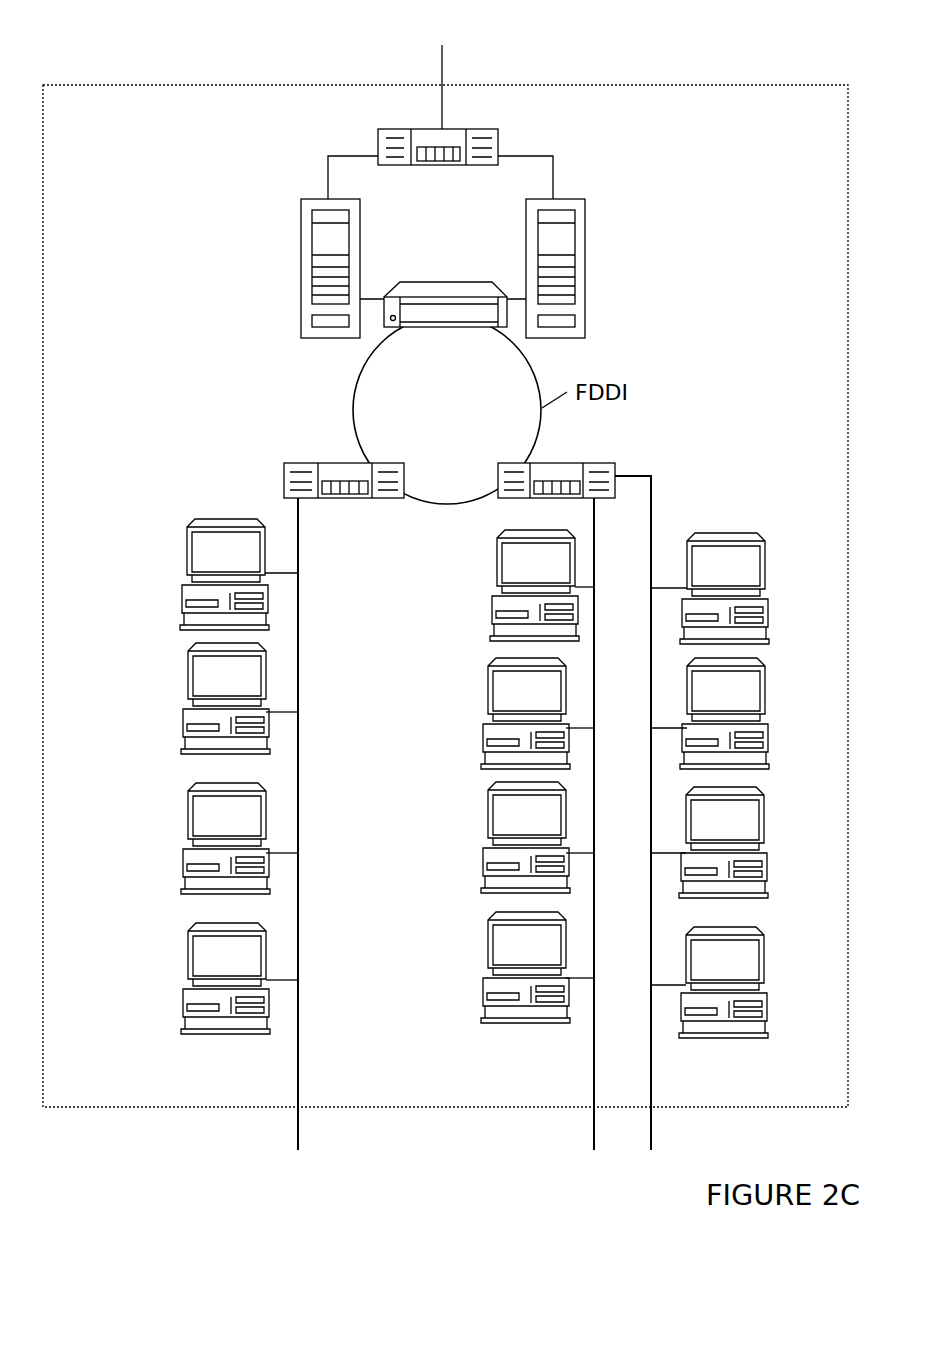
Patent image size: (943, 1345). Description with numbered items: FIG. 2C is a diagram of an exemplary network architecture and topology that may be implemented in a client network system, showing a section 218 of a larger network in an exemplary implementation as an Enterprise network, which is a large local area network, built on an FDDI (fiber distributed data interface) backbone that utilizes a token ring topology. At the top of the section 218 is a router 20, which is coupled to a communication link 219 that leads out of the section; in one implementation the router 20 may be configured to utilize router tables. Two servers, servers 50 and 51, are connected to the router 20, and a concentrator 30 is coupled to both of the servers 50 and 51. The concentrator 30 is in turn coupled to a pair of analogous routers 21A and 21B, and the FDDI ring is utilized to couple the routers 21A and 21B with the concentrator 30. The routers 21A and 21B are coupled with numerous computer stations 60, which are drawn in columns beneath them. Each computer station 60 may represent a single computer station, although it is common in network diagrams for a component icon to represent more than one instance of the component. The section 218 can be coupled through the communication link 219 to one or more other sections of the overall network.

The section 218 is at (157, 85).
The communication link 219 is at (442, 58).
The router 20 is at (438, 147).
The server 50 is at (330, 268).
The server 51 is at (555, 268).
The concentrator 30 is at (445, 304).
The router 21A is at (344, 480).
The router 21B is at (556, 480).
The computer station 60 is at (474, 778).